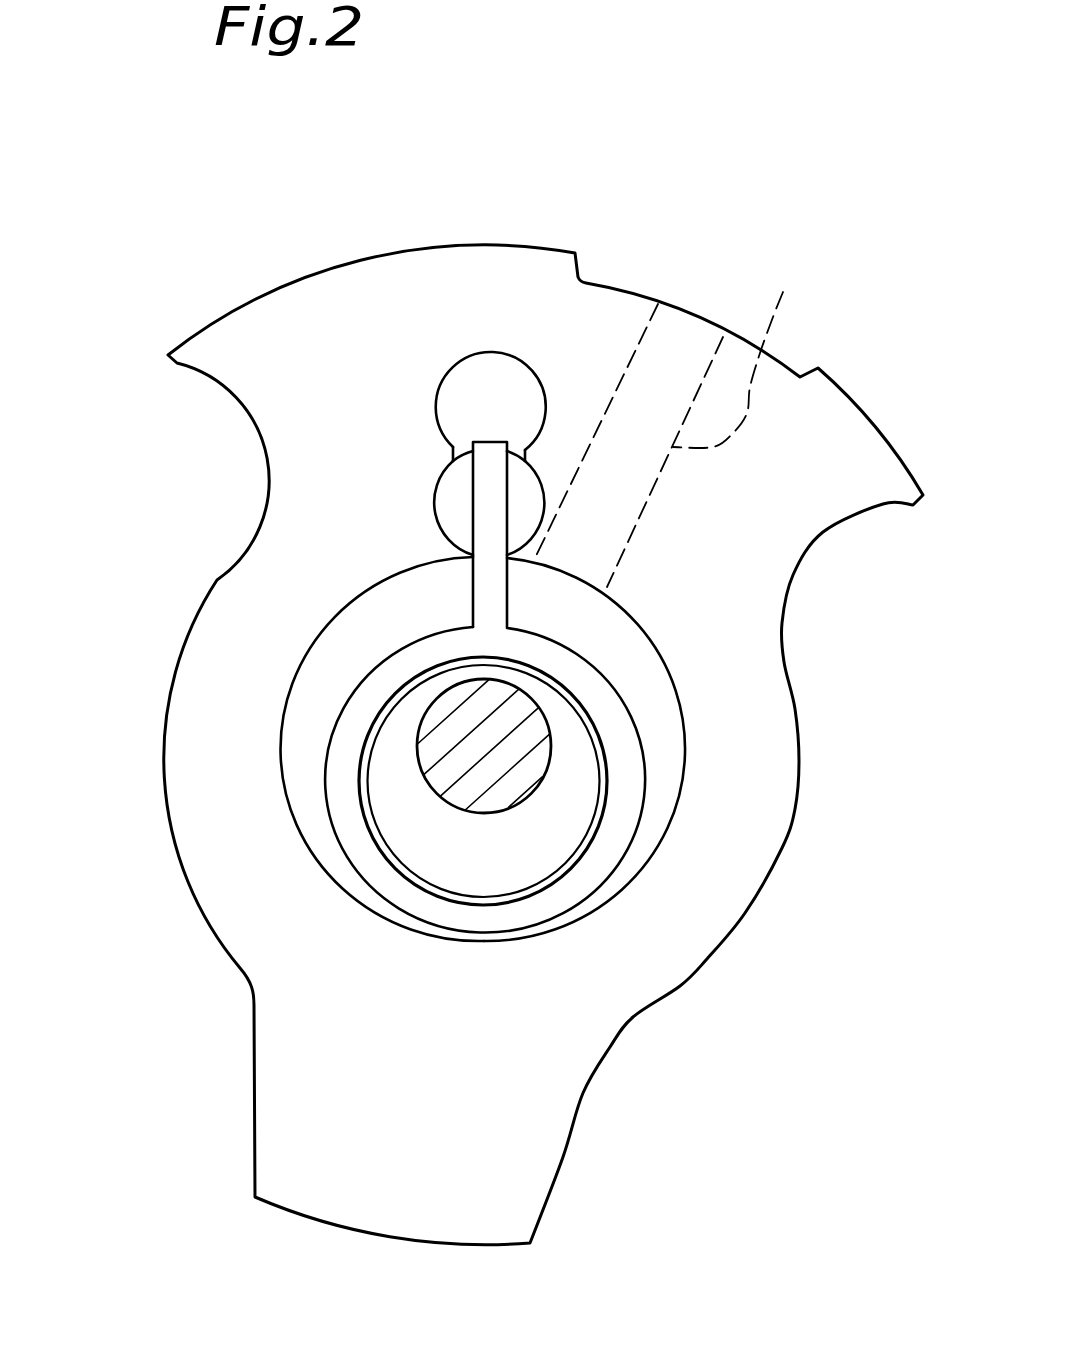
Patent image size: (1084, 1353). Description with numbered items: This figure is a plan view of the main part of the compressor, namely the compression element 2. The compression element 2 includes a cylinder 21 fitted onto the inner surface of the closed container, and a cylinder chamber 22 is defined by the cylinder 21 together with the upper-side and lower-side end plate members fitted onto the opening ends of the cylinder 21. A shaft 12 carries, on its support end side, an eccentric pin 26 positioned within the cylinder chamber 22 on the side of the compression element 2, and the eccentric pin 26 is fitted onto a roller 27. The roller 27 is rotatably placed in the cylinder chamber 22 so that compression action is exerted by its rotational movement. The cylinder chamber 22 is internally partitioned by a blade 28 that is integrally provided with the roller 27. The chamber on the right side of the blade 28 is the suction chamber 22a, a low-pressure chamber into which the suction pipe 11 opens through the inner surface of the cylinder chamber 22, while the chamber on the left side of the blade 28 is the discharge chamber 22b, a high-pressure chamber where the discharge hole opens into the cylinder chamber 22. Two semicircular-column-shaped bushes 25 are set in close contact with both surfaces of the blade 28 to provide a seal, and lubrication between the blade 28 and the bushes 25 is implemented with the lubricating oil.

The compression element 2 is at (227, 313).
The cylinder 21 is at (465, 287).
The cylinder chamber 22 is at (407, 588).
The suction chamber 22a is at (662, 792).
The discharge chamber 22b is at (302, 767).
The bushes 25 is at (450, 497).
The eccentric pin 26 is at (528, 868).
The roller 27 is at (598, 693).
The blade 28 is at (497, 602).
The suction pipe 11 is at (675, 416).
The shaft 12 is at (525, 773).